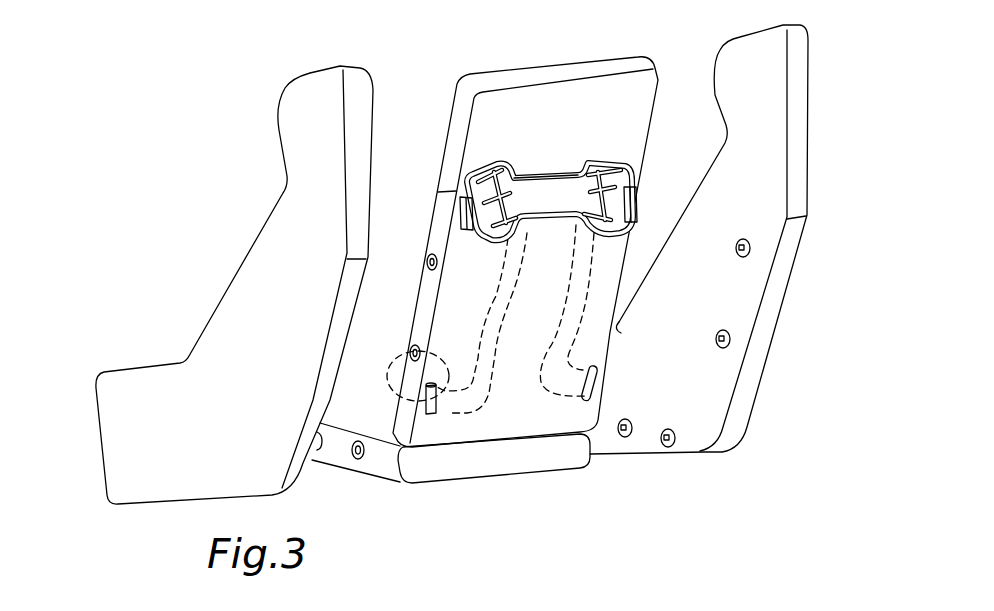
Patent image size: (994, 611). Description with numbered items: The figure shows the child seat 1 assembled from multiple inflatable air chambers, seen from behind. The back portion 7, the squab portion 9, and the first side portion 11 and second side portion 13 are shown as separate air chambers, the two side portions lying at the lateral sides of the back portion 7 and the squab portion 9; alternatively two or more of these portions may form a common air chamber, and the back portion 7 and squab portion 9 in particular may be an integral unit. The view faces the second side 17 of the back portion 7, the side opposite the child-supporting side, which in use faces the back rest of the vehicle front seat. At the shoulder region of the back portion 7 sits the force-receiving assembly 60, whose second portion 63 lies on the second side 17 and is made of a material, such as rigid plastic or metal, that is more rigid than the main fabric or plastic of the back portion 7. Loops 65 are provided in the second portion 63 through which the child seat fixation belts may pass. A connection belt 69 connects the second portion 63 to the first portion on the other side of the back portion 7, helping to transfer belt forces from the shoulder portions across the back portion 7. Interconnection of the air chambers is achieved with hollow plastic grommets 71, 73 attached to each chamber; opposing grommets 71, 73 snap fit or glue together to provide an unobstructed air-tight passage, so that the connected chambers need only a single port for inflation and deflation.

The child seat 1 is at (249, 52).
The back portion 7 is at (525, 252).
The squab portion 9 is at (398, 372).
The first side portion 11 is at (698, 341).
The second side portion 13 is at (284, 328).
The second side 17 is at (585, 141).
The force-receiving assembly 60 is at (581, 172).
The second portion 63 is at (528, 193).
The loops 65 is at (460, 222).
The connection belt 69 is at (450, 408).
The hollow plastic grommet 71 is at (751, 249).
The hollow plastic grommet 73 is at (425, 261).